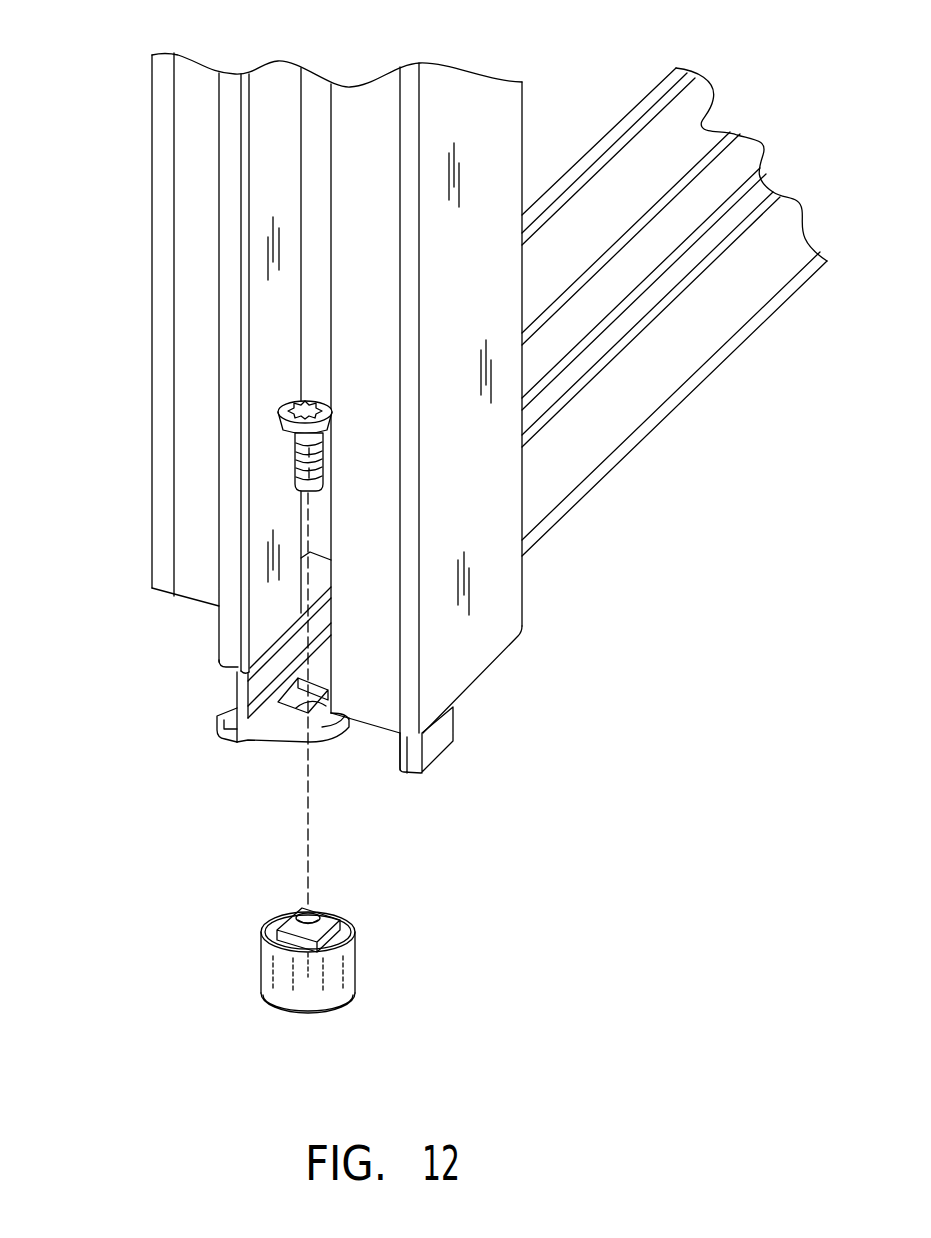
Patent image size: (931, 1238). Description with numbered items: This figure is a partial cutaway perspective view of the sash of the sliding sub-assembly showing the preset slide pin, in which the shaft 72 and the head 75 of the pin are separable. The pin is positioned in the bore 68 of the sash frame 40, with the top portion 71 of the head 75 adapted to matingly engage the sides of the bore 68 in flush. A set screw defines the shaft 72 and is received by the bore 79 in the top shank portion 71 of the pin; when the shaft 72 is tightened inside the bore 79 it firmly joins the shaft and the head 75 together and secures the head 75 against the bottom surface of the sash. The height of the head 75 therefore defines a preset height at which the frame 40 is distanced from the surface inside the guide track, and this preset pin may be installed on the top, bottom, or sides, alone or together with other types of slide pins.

The frame 40 is at (217, 637).
The shaft 72 is at (293, 456).
The bore 68 is at (297, 706).
The head 75 is at (262, 963).
The bore 79 is at (302, 907).
The top portion 71 is at (342, 921).